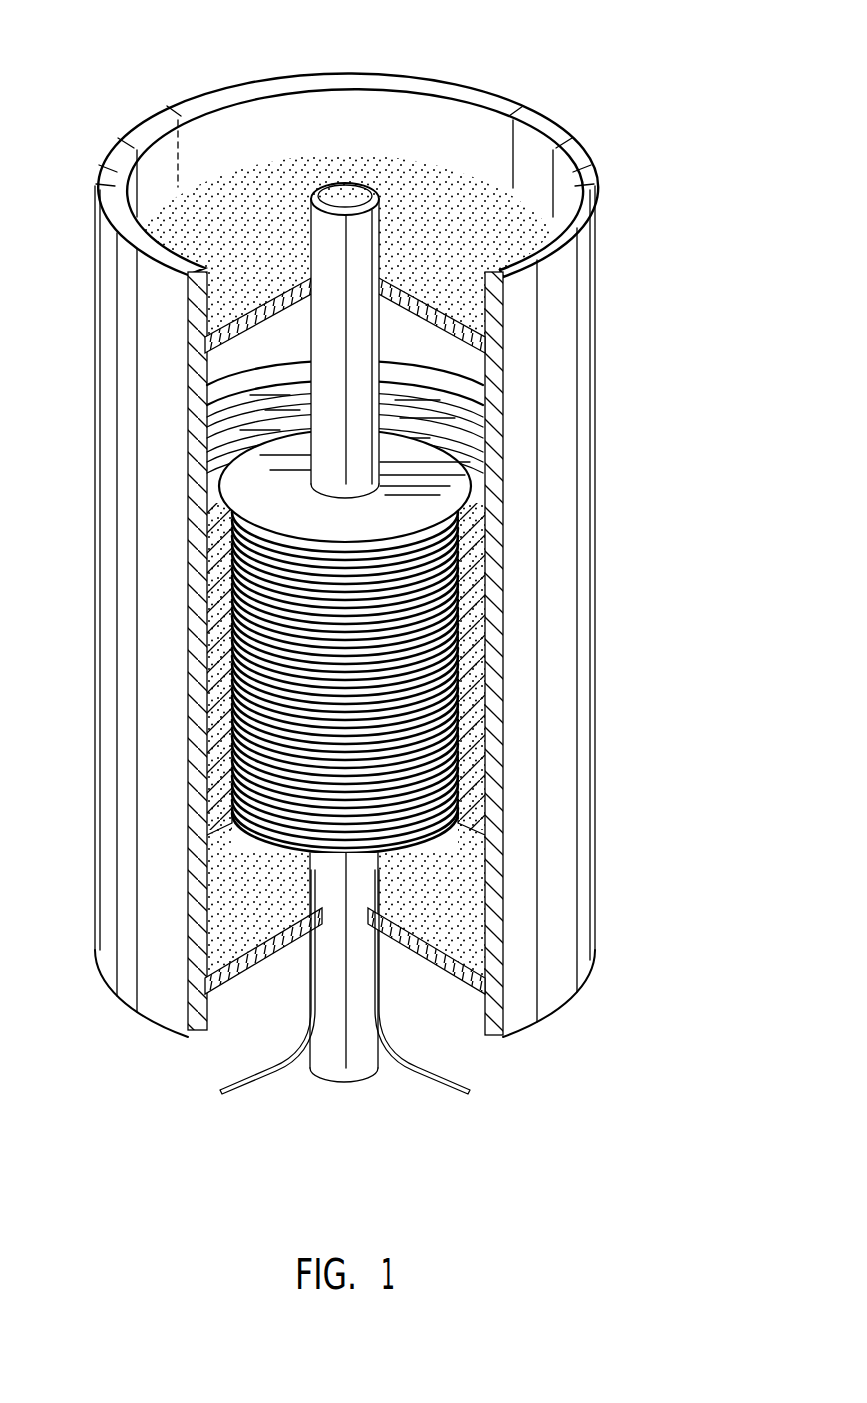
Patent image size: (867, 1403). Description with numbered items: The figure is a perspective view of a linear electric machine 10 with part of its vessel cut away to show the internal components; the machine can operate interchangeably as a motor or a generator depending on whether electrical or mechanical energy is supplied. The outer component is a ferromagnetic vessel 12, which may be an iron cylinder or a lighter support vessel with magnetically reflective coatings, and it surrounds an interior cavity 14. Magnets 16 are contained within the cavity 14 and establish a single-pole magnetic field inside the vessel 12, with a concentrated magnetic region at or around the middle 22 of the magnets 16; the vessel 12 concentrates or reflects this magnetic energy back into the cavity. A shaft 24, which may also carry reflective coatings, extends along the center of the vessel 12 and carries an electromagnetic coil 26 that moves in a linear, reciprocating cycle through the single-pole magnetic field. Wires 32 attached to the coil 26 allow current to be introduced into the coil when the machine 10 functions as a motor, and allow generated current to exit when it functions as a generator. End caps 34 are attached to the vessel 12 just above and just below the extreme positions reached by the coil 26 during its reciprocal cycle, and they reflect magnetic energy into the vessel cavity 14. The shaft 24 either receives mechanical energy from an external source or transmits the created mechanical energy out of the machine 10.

The linear electric machine 10 is at (598, 78).
The ferromagnetic vessel 12 is at (153, 978).
The interior cavity 14 is at (415, 993).
The magnets 16 is at (500, 558).
The middle of the magnets 22 is at (190, 686).
The shaft 24 is at (340, 190).
The electromagnetic coil 26 is at (425, 763).
The wires 32 is at (257, 1077).
The end caps 34 is at (505, 222).